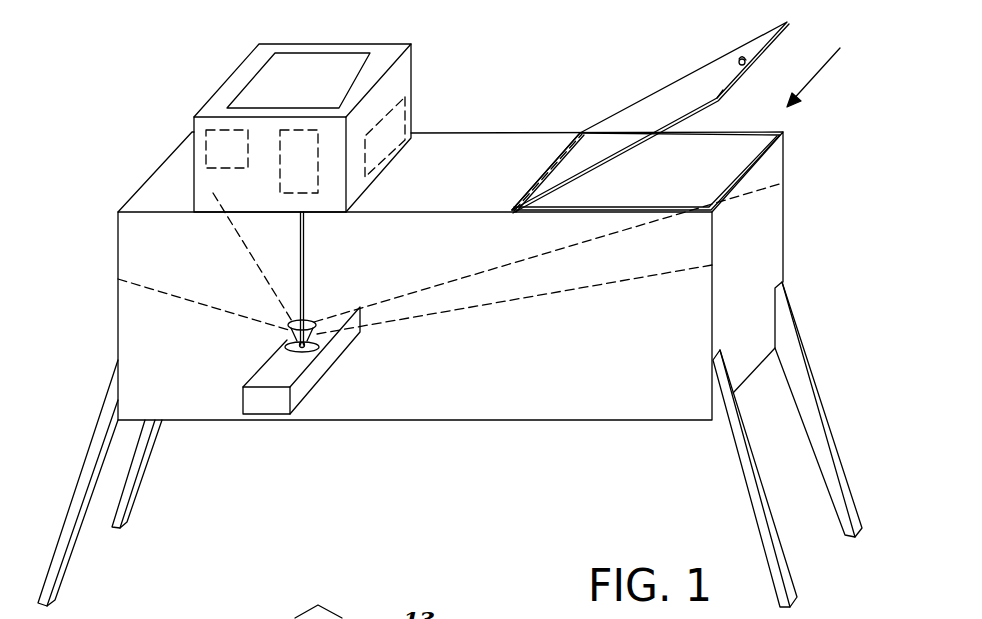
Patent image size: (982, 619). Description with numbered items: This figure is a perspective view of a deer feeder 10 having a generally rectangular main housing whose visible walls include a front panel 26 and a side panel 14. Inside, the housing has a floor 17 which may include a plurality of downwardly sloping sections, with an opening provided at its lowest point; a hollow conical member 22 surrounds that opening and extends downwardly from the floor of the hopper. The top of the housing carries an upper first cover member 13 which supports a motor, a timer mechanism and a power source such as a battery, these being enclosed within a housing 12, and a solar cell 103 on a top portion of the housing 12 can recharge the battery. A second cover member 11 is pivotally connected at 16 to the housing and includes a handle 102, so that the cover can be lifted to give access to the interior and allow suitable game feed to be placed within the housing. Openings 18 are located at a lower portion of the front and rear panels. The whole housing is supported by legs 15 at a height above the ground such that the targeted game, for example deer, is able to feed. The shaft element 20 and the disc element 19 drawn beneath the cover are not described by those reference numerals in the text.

The deer feeder 10 is at (833, 64).
The second cover member 11 is at (652, 115).
The housing 12 is at (413, 70).
The upper first cover member 13 is at (155, 197).
The side panel 14 is at (755, 268).
The legs 15 is at (70, 560).
The pivotal connection 16 is at (548, 167).
The floor 17 is at (218, 314).
The openings 18 is at (276, 398).
The base disc 19 is at (318, 347).
The shaft 20 is at (303, 290).
The hollow conical member 22 is at (288, 334).
The front panel 26 is at (467, 380).
The handle 102 is at (740, 58).
The solar cell 103 is at (273, 80).